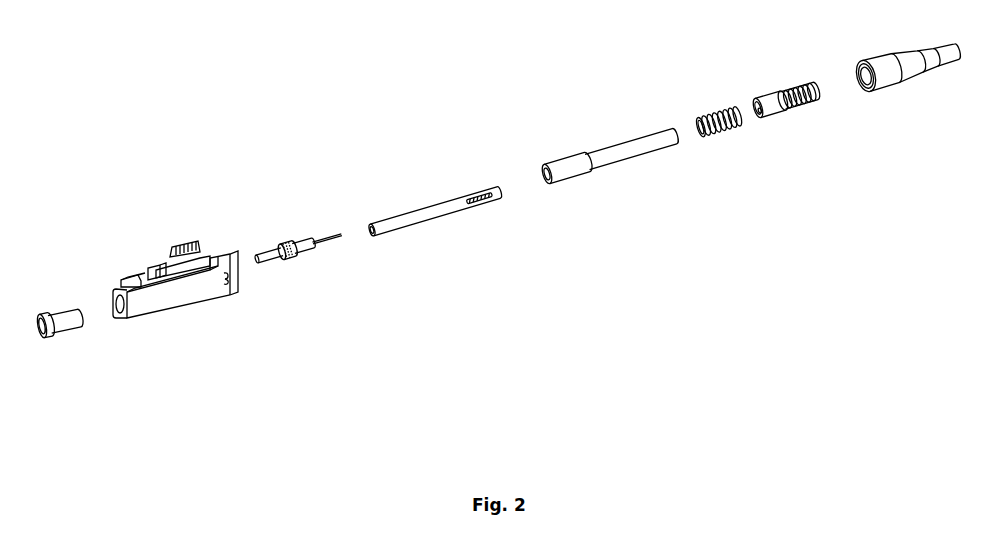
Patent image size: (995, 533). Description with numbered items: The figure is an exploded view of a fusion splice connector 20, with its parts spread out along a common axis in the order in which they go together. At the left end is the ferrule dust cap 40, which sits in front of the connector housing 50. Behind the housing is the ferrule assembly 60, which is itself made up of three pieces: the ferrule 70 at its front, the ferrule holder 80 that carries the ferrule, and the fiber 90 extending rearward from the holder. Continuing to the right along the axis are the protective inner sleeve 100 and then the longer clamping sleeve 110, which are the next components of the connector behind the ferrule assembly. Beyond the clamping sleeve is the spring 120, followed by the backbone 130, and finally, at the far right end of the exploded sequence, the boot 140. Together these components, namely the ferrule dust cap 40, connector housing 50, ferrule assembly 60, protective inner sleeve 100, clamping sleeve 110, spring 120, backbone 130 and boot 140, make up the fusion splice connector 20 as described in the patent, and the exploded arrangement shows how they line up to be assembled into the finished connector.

The fusion splice connector 20 is at (125, 66).
The ferrule dust cap 40 is at (67, 329).
The connector housing 50 is at (188, 292).
The ferrule assembly 60 is at (285, 224).
The ferrule 70 is at (271, 262).
The ferrule holder 80 is at (298, 255).
The fiber 90 is at (337, 238).
The protective inner sleeve 100 is at (443, 212).
The clamping sleeve 110 is at (603, 158).
The spring 120 is at (722, 135).
The backbone 130 is at (800, 105).
The boot 140 is at (888, 78).